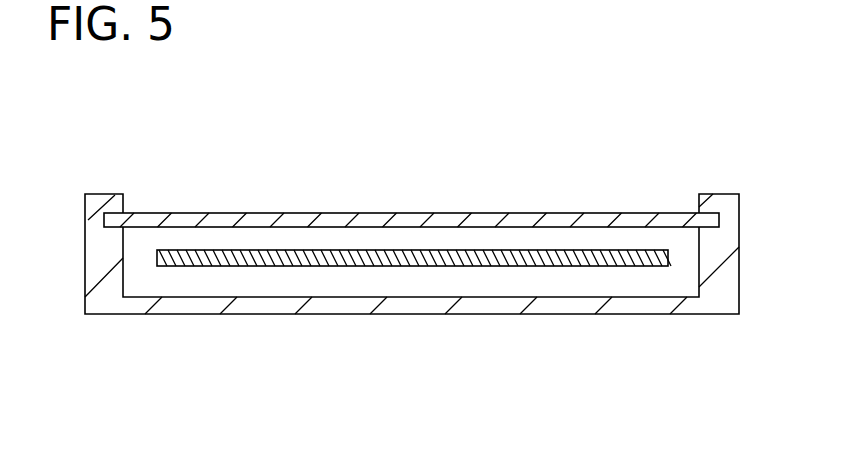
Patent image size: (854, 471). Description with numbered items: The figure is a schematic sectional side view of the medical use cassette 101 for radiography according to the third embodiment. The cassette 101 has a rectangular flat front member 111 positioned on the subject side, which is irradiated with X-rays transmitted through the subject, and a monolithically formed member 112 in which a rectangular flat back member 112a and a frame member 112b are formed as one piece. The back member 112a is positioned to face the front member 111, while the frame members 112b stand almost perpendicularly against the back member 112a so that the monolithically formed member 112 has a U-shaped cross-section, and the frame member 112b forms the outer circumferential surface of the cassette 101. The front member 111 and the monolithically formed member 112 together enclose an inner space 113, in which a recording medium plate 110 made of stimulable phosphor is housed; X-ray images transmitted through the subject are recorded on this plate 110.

The medical use cassette 101 is at (618, 180).
The recording medium plate 110 is at (450, 257).
The front member 111 is at (238, 222).
The monolithically formed member 112 is at (376, 285).
The back member 112a is at (346, 307).
The frame member 112b is at (100, 243).
The inner space 113 is at (342, 238).